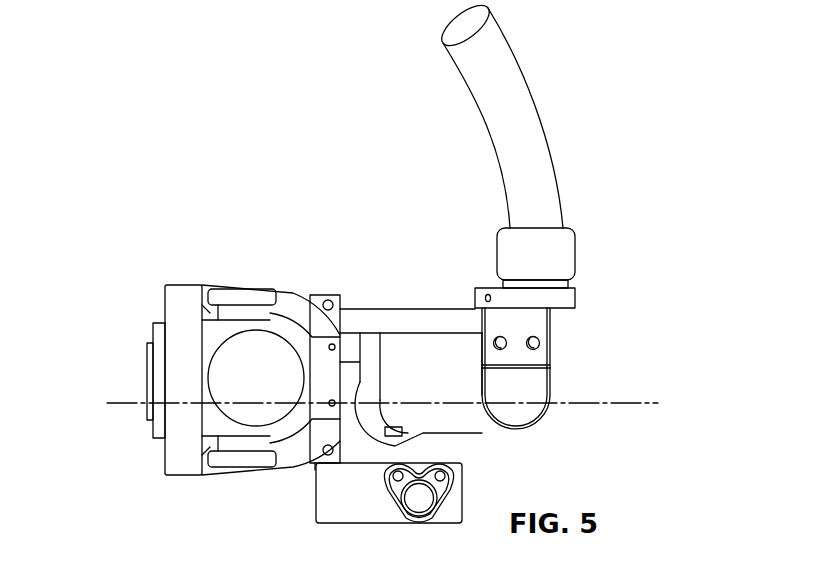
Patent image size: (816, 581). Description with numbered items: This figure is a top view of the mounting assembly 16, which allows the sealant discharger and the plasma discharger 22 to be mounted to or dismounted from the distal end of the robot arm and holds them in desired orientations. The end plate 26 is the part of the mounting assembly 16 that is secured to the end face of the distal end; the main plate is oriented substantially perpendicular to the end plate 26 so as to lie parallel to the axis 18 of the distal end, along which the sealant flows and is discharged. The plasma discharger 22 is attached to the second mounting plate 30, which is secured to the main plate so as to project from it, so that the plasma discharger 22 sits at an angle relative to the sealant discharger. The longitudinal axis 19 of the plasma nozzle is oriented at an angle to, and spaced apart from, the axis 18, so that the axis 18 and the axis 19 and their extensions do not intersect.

The mounting assembly 16 is at (146, 92).
The axis 18 is at (256, 378).
The longitudinal axis 19 is at (642, 402).
The plasma discharger 22 is at (460, 412).
The end plate 26 is at (322, 297).
The second mounting plate 30 is at (408, 313).